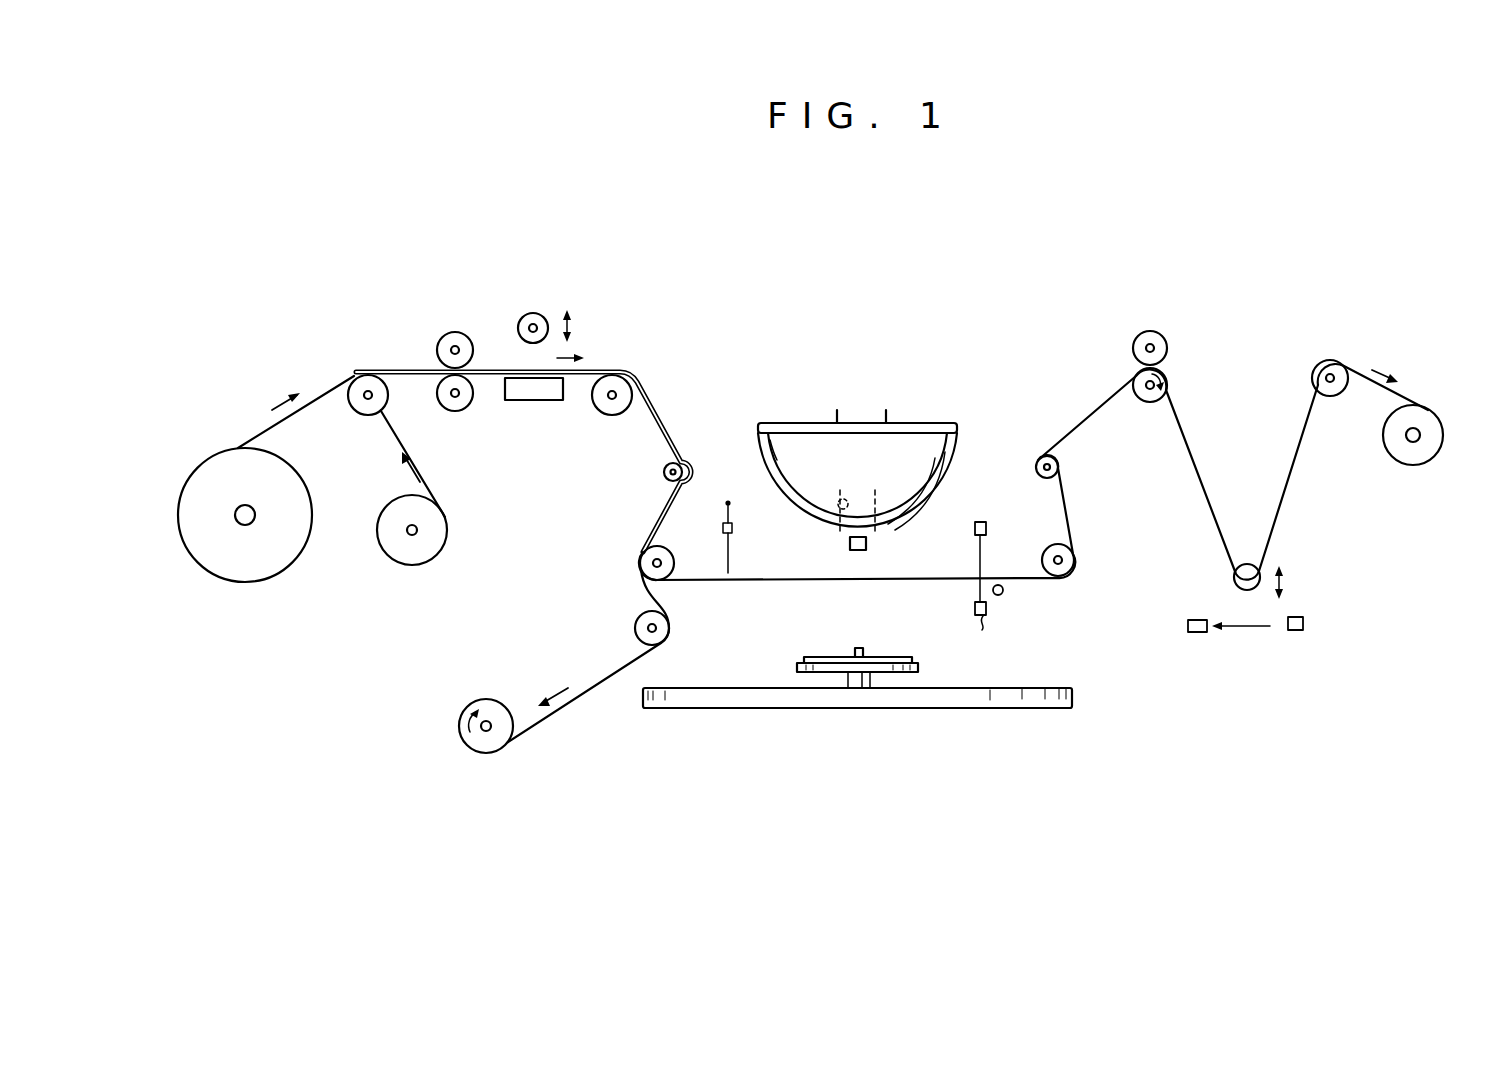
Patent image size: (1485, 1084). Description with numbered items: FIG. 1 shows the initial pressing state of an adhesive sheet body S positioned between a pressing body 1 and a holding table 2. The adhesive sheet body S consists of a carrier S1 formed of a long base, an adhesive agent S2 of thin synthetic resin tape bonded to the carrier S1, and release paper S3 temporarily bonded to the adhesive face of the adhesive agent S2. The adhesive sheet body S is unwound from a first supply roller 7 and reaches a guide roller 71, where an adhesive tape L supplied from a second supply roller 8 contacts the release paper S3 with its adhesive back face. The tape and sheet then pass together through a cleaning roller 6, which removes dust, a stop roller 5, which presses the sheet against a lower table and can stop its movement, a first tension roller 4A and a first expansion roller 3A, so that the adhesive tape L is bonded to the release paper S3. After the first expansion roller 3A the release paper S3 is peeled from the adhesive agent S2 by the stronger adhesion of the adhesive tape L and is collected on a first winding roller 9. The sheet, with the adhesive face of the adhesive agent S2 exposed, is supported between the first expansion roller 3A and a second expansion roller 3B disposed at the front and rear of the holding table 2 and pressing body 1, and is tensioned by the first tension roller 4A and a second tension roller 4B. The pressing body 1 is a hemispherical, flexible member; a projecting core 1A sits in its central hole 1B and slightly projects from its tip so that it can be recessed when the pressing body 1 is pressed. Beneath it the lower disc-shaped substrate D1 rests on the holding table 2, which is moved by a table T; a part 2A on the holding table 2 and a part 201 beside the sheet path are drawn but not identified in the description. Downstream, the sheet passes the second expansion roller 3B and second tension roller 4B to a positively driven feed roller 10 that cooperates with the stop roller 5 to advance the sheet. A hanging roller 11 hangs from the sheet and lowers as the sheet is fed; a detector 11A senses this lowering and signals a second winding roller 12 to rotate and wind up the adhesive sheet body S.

The pressing body 1 is at (956, 455).
The projecting core 1A is at (868, 548).
The central hole 1B is at (838, 510).
The holding table 2 is at (920, 668).
The stage projection 2A is at (857, 648).
The lower disc-shaped substrate D1 is at (816, 657).
The table T is at (1034, 700).
The first expansion roller 3A is at (663, 550).
The second expansion roller 3B is at (1075, 566).
The first tension roller 4A is at (663, 471).
The second tension roller 4B is at (1059, 467).
The stop roller 5 is at (537, 312).
The cleaning roller 6 is at (455, 330).
The first supply roller 7 is at (225, 583).
The guide roller 71 is at (389, 401).
The second supply roller 8 is at (436, 561).
The first winding roller 9 is at (465, 745).
The feed roller 10 is at (1166, 338).
The hanging roller 11 is at (1233, 586).
The detector 11A is at (1304, 624).
The second winding roller 12 is at (1428, 410).
The sensor 201 is at (1002, 595).
The adhesive sheet body S is at (252, 412).
The carrier S1 is at (316, 392).
The adhesive agent S2 is at (285, 418).
The release paper S3 is at (590, 700).
The adhesive tape L is at (420, 480).